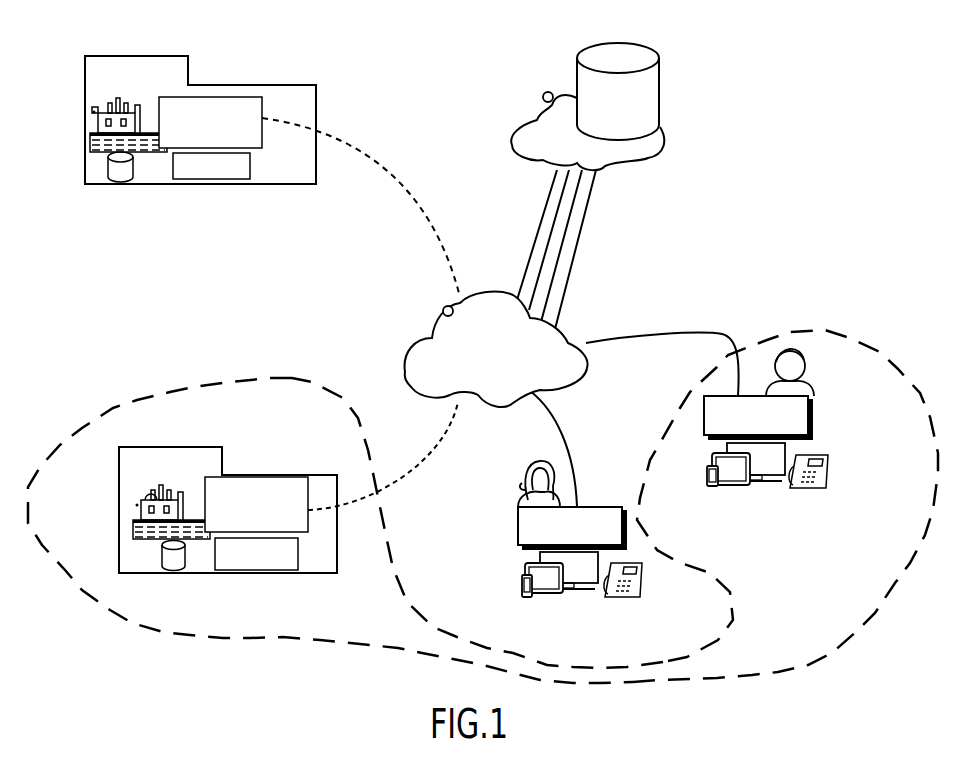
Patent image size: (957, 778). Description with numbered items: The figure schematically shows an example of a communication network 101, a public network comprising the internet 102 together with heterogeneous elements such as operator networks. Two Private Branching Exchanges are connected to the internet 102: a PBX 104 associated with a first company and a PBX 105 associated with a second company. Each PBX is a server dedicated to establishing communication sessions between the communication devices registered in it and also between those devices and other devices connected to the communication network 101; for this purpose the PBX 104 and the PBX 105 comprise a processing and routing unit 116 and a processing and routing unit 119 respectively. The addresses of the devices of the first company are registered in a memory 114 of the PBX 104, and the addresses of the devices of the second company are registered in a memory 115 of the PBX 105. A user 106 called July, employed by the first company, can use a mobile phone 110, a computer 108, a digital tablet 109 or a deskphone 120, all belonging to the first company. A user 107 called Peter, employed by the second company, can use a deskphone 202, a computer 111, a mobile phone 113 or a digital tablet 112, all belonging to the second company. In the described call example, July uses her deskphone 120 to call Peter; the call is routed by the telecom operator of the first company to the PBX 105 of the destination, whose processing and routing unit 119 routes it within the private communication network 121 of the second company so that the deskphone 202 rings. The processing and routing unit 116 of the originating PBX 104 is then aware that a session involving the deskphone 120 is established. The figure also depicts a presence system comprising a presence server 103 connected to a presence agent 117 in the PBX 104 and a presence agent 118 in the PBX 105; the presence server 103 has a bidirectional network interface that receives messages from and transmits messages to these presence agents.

The communication network 101 is at (740, 230).
The internet 102 is at (418, 347).
The presence server 103 is at (577, 92).
The PBX 104 is at (158, 135).
The PBX 105 is at (189, 520).
The user 106 is at (574, 557).
The user 107 is at (766, 445).
The computer 108 is at (590, 590).
The digital tablet 109 is at (545, 597).
The mobile phone 110 is at (522, 590).
The computer 111 is at (773, 485).
The digital tablet 112 is at (732, 485).
The mobile phone 113 is at (707, 476).
The memory 114 is at (120, 182).
The memory 115 is at (173, 572).
The processing and routing unit 116 is at (213, 180).
The presence agent 117 is at (248, 97).
The presence agent 118 is at (280, 477).
The processing and routing unit 119 is at (258, 572).
The deskphone 120 is at (642, 583).
The private communication network 121 is at (887, 360).
The deskphone 202 is at (828, 478).